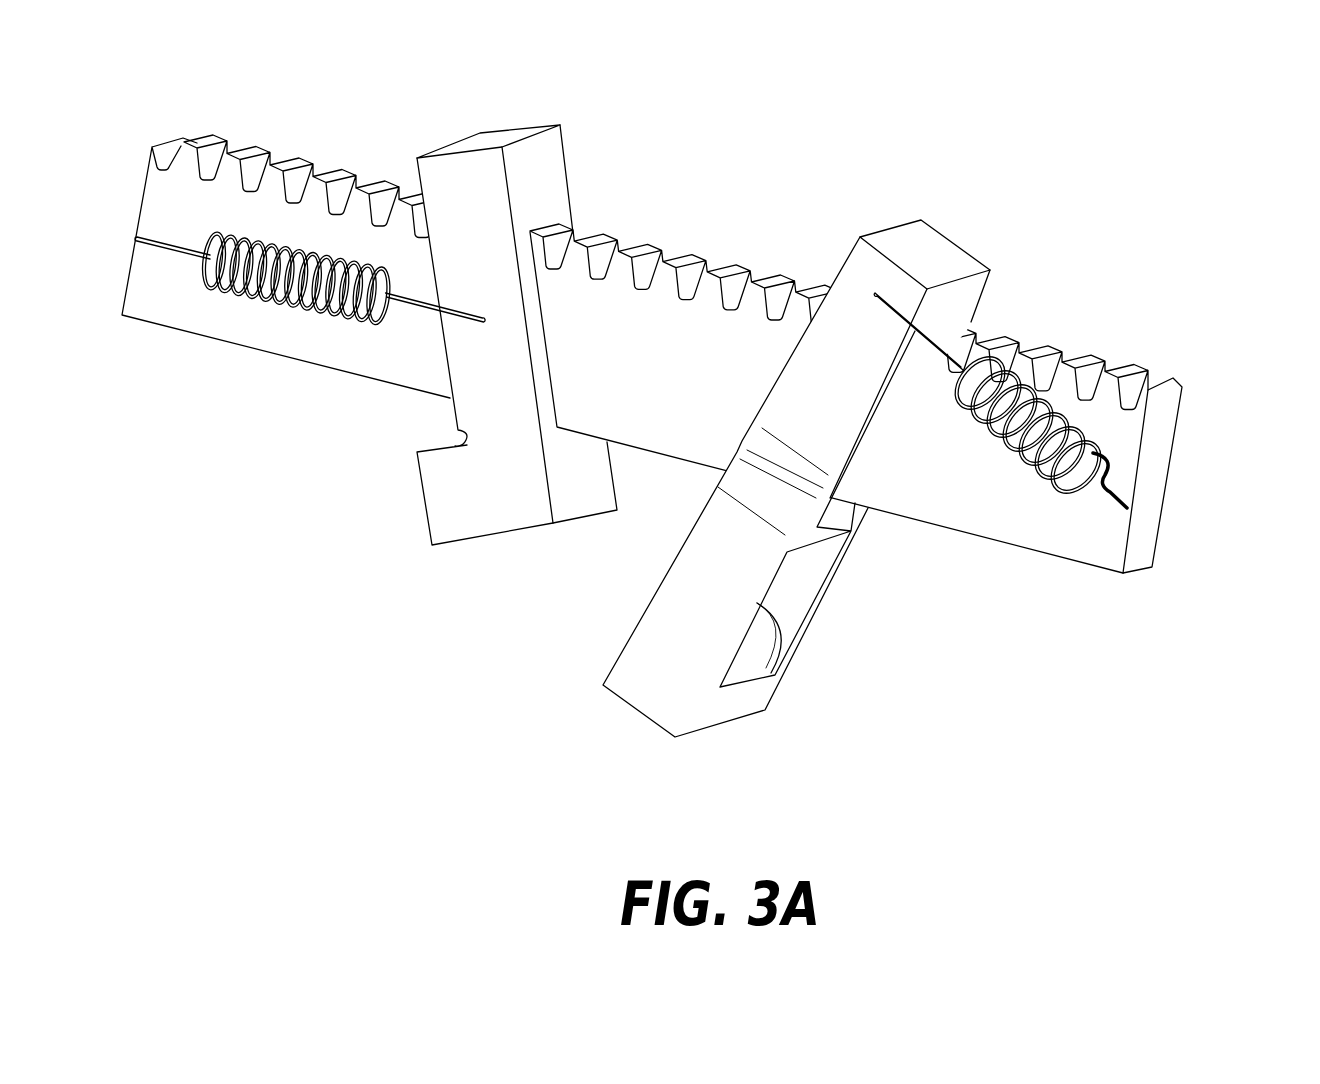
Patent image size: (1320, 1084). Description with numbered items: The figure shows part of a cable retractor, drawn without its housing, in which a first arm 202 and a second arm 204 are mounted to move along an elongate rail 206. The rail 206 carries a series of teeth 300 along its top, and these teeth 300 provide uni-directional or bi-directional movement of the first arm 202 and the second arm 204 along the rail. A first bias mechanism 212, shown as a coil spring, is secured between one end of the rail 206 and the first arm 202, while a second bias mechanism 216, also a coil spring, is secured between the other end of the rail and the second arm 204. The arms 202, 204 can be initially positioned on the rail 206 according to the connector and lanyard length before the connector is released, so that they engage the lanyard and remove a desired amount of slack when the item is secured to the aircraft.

The first arm 202 is at (930, 240).
The second arm 204 is at (490, 143).
The elongate rail 206 is at (1165, 422).
The first bias mechanism 212 is at (1107, 453).
The second bias mechanism 216 is at (273, 307).
The teeth 300 is at (215, 150).